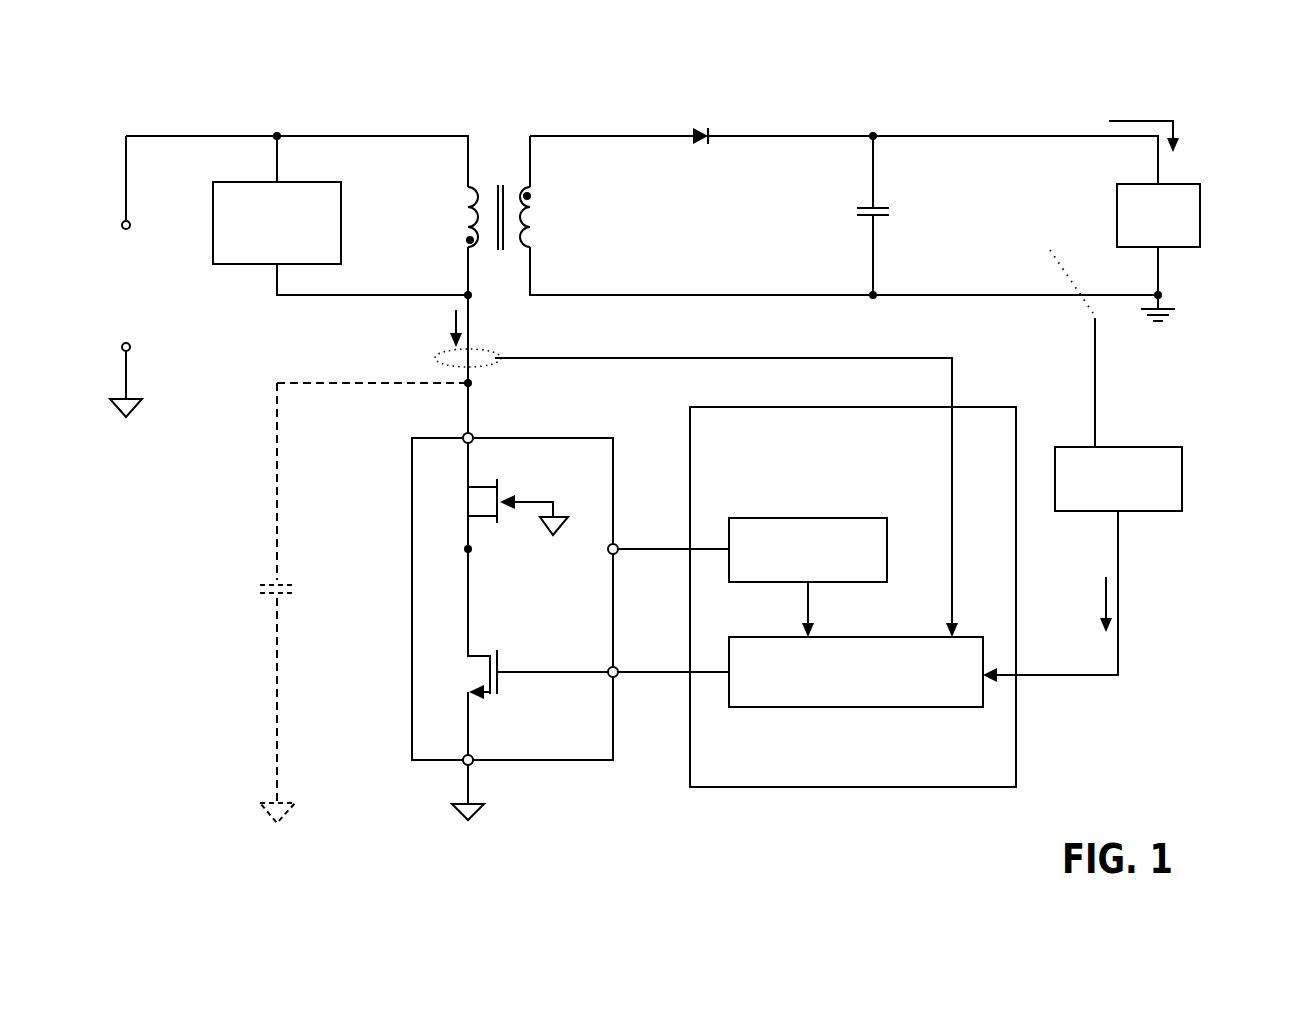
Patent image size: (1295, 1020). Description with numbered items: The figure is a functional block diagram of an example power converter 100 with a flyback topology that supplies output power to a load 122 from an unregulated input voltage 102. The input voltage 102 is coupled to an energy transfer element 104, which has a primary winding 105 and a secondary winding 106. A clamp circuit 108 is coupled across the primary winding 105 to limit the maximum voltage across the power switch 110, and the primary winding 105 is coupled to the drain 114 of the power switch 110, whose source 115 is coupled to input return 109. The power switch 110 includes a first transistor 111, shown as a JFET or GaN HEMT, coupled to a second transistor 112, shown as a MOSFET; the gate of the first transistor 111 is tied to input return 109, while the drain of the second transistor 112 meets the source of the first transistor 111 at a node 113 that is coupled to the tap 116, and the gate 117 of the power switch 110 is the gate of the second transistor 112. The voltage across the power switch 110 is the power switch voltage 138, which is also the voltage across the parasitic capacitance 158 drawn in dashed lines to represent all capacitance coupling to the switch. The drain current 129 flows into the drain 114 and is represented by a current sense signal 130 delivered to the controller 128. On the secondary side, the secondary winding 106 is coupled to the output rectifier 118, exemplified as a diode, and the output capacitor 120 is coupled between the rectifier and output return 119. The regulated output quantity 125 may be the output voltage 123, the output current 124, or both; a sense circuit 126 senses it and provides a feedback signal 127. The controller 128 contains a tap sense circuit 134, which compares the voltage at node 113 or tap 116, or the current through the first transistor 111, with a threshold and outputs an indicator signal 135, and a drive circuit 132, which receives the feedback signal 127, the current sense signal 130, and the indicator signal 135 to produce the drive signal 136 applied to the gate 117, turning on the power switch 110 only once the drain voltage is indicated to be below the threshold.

The power converter 100 is at (1222, 57).
The input voltage 102 is at (117, 274).
The energy transfer element 104 is at (500, 258).
The primary winding 105 is at (464, 214).
The secondary winding 106 is at (535, 218).
The clamp circuit 108 is at (242, 270).
The input return 109 is at (126, 424).
The power switch 110 is at (410, 538).
The first transistor Q1 111 is at (508, 485).
The second transistor Q2 112 is at (500, 661).
The node 113 is at (475, 557).
The drain 114 is at (463, 432).
The source 115 is at (455, 766).
The tap 116 is at (618, 540).
The gate 117 is at (620, 683).
The output rectifier D1 118 is at (722, 118).
The output return 119 is at (1172, 330).
The output capacitor C2 120 is at (815, 214).
The load 122 is at (1200, 203).
The output voltage 123 is at (940, 202).
The output current 124 is at (1132, 92).
The output quantity 125 is at (1062, 224).
The sense circuit 126 is at (1185, 483).
The feedback signal 127 is at (1178, 600).
The controller 128 is at (1000, 397).
The drain current 129 is at (420, 329).
The current sense signal 130 is at (755, 348).
The drive circuit 132 is at (790, 712).
The tap sense circuit 134 is at (828, 510).
The indicator signal 135 is at (820, 609).
The drive signal 136 is at (658, 643).
The power switch voltage 138 is at (348, 622).
The capacitance C_P 158 is at (263, 572).